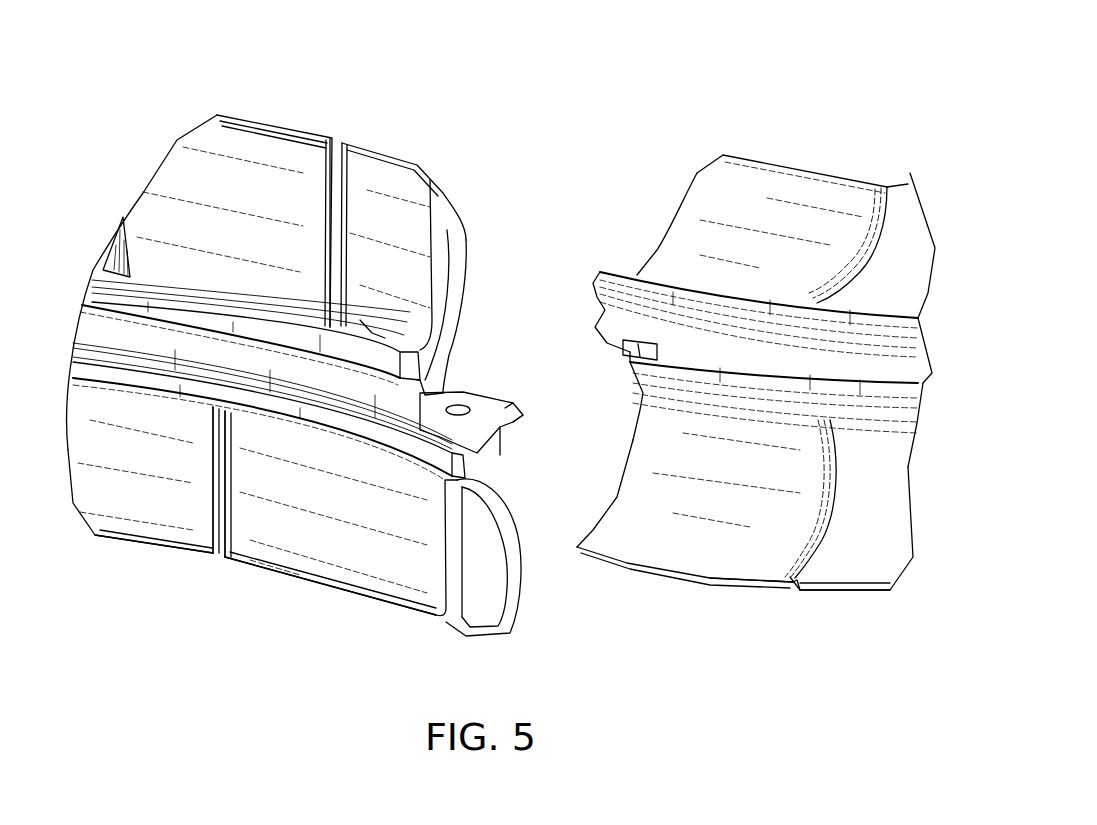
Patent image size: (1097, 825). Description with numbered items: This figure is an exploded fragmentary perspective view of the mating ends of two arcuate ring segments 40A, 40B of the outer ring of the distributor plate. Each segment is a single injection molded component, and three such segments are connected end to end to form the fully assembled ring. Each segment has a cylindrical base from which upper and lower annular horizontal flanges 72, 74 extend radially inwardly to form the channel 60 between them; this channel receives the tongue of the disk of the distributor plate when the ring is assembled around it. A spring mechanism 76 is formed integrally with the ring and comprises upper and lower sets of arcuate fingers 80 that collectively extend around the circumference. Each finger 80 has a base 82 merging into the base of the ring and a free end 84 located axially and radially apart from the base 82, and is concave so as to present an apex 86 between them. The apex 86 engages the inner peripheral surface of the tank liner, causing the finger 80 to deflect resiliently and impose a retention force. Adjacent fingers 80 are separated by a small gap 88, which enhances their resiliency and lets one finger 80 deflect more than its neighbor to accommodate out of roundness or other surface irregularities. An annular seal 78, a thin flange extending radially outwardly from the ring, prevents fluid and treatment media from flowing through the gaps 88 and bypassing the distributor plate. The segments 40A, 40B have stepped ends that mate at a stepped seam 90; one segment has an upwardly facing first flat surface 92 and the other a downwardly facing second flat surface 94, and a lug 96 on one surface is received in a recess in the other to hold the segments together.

The arcuate ring segment 40A is at (330, 100).
The arcuate ring segment 40B is at (826, 158).
The channel 60 is at (105, 328).
The annular horizontal flange 72 is at (370, 355).
The annular horizontal flange 74 is at (433, 392).
The spring mechanism 76 is at (445, 190).
The annular seal 78 is at (520, 428).
The finger 80 is at (243, 145).
The finger base 82 is at (123, 250).
The free end 84 is at (280, 130).
The apex 86 is at (462, 300).
The gap 88 is at (335, 140).
The stepped seam 90 is at (515, 412).
The first flat surface 92 is at (615, 343).
The second flat surface 94 is at (640, 348).
The lug 96 is at (490, 430).